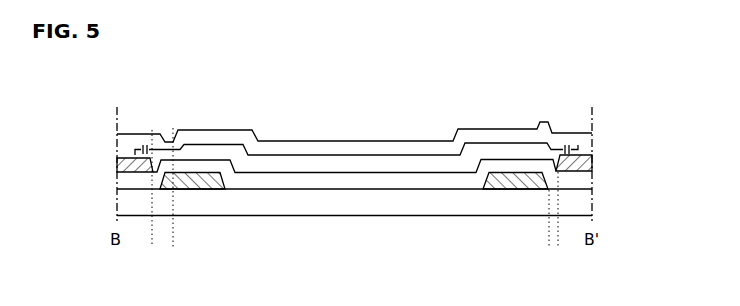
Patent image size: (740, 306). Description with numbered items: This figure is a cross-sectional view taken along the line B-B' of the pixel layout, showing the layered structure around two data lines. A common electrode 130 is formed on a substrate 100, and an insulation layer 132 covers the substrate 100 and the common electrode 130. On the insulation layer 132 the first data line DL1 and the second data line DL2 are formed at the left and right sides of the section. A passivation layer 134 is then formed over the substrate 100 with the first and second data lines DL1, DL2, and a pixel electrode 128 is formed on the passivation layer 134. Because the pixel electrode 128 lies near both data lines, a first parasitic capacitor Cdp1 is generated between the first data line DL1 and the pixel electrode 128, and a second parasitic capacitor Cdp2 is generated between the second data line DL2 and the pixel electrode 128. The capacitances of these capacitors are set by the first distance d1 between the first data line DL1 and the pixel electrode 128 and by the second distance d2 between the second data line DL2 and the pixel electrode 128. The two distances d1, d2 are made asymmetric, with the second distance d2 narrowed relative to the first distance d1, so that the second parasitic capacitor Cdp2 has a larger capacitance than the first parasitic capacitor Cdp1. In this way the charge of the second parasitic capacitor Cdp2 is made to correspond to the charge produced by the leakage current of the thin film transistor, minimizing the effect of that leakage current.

The substrate 100 is at (589, 200).
The pixel electrode 128 is at (480, 131).
The common electrode 130 is at (210, 187).
The insulation layer 132 is at (592, 181).
The passivation layer 134 is at (593, 139).
The first data line DL1 is at (116, 161).
The second data line DL2 is at (594, 163).
The first parasitic capacitor Cdp1 is at (147, 134).
The second parasitic capacitor Cdp2 is at (571, 134).
The first distance d1 is at (173, 239).
The second distance d2 is at (571, 240).